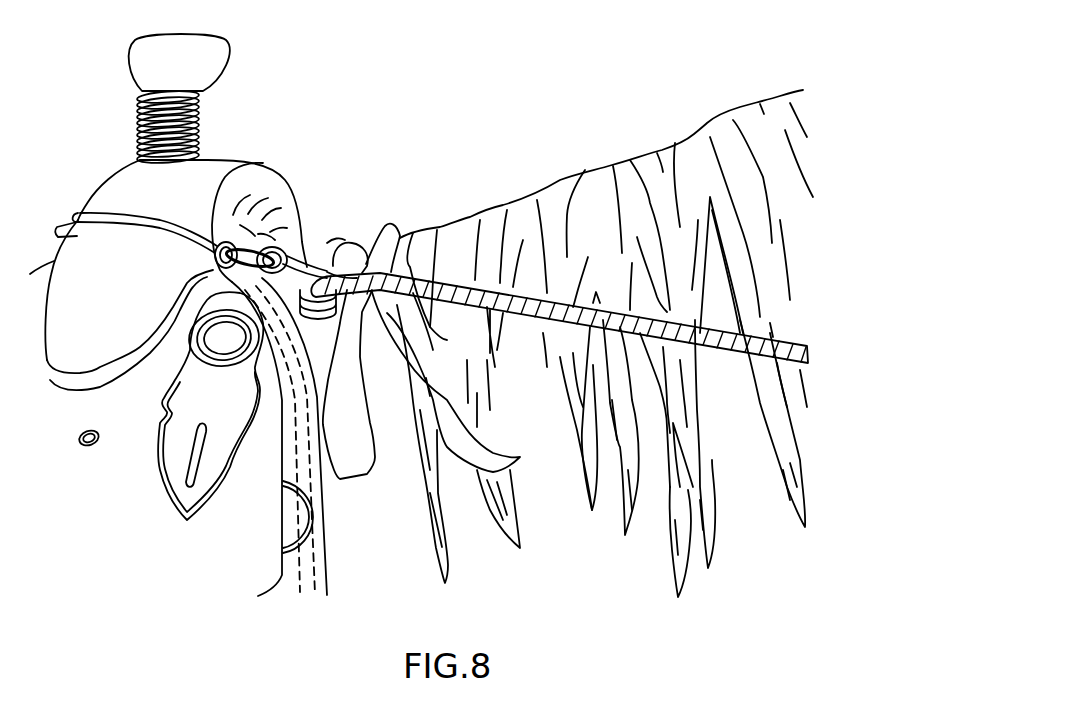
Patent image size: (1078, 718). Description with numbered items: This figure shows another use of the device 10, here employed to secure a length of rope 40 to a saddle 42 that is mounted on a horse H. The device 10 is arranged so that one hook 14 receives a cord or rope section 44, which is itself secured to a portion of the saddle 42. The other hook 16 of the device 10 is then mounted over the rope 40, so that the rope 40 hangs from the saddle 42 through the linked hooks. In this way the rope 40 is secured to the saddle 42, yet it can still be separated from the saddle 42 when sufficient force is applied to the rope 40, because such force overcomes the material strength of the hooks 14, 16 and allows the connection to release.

The device 10 is at (303, 267).
The hook 14 is at (303, 256).
The other hook 16 is at (321, 312).
The rope 40 is at (453, 290).
The saddle 42 is at (213, 175).
The cord or rope section 44 is at (157, 226).
The horse H is at (602, 200).